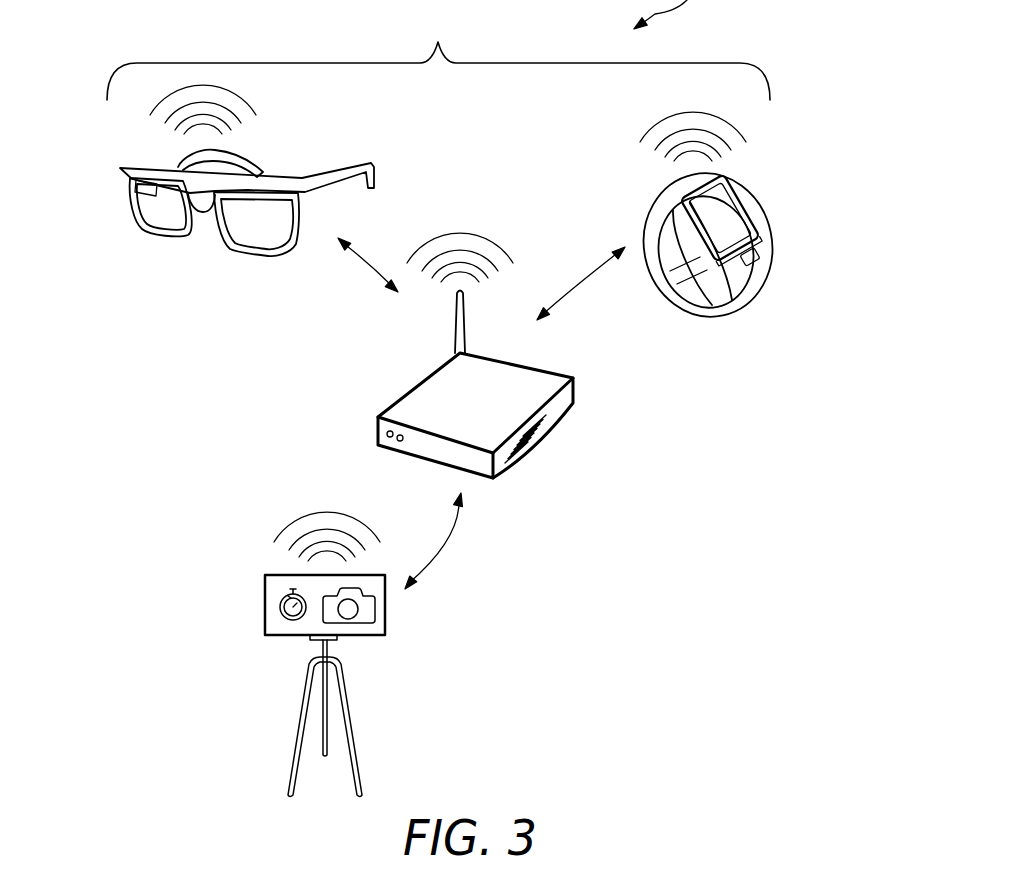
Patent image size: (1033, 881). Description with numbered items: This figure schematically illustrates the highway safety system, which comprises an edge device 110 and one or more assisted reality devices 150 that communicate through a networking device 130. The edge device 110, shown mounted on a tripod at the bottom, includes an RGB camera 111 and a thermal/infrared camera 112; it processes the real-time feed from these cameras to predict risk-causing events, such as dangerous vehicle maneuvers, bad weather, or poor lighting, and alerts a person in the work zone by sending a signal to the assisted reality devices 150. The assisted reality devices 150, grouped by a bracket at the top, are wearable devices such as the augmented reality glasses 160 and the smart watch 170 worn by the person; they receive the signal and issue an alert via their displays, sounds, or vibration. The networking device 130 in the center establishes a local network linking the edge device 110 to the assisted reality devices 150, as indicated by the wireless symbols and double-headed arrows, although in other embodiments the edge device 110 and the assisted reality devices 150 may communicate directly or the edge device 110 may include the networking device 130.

The assisted reality devices 150 is at (448, 169).
The augmented reality glasses 160 is at (175, 213).
The smart watch 170 is at (730, 222).
The networking device 130 is at (558, 415).
The edge device 110 is at (277, 587).
The RGB camera 111 is at (365, 608).
The thermal/infrared camera 112 is at (283, 605).